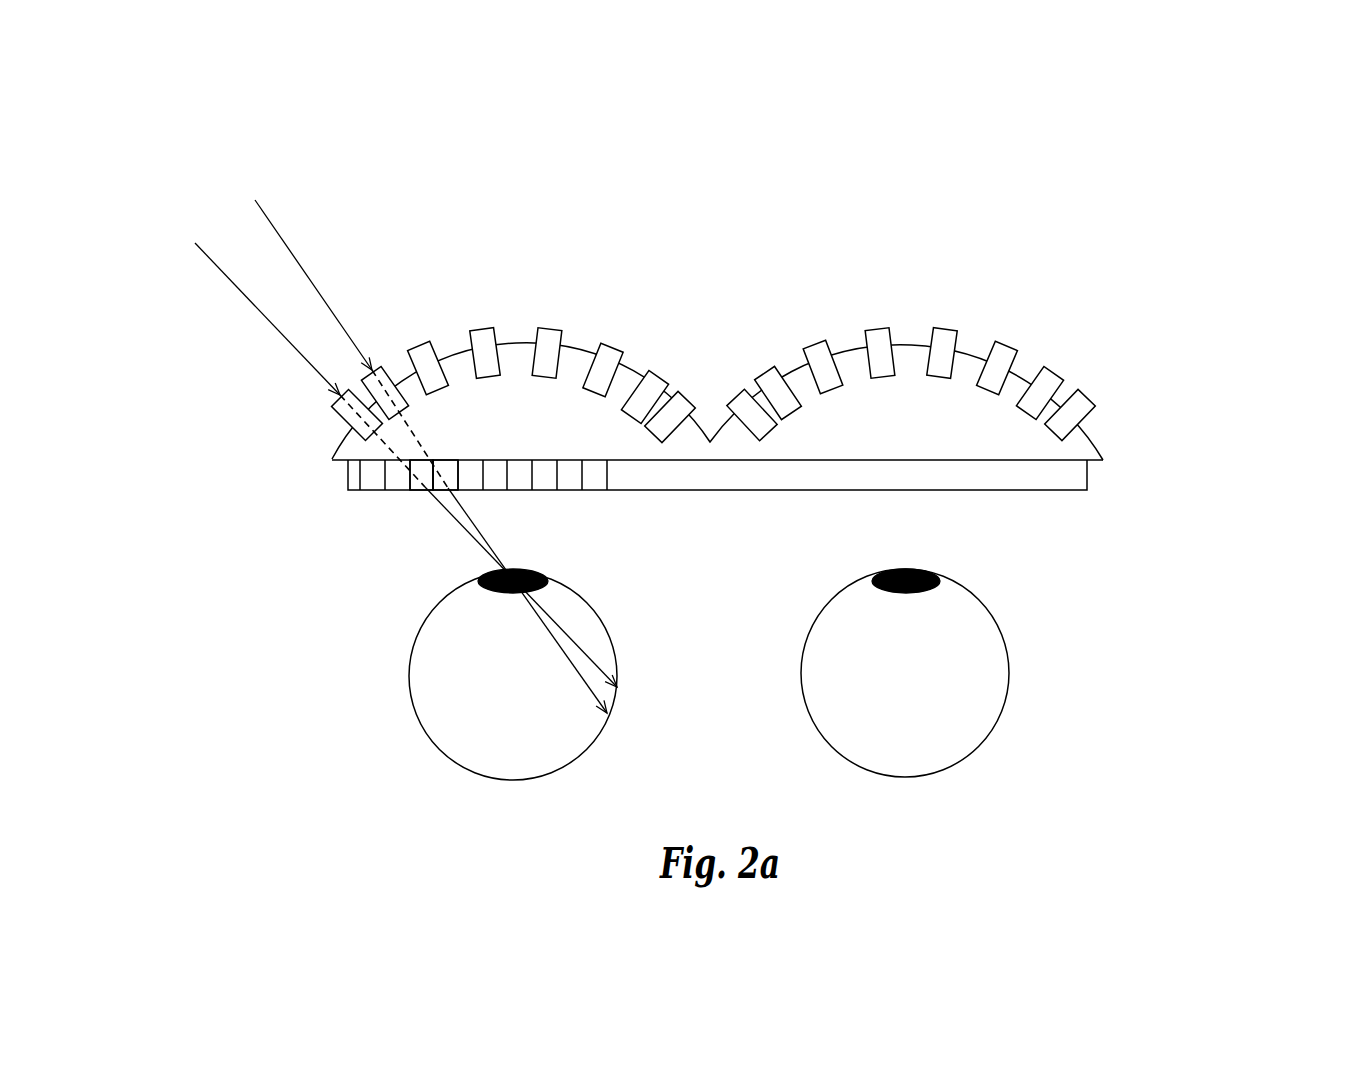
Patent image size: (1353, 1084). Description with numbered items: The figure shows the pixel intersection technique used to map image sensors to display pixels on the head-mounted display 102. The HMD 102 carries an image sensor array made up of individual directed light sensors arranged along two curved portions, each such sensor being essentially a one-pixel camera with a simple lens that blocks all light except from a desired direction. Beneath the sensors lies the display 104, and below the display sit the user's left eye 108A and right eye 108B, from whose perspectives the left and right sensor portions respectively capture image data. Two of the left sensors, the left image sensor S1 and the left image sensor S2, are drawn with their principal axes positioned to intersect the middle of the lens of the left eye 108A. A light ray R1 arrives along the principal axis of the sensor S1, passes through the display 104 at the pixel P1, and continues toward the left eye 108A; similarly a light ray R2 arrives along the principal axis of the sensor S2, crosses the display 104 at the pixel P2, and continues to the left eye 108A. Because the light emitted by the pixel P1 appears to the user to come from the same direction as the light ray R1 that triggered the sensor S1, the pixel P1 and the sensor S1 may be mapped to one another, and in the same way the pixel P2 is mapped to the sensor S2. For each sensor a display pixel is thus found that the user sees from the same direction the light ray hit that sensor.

The head-mounted display 102 is at (682, 414).
The display 104 is at (770, 486).
The left eye 108A is at (387, 676).
The right eye 108B is at (1032, 673).
The left image sensor S1 is at (327, 403).
The left image sensor S2 is at (387, 358).
The pixel P1 is at (425, 487).
The pixel P2 is at (457, 482).
The light ray R1 is at (365, 427).
The light ray R2 is at (399, 409).